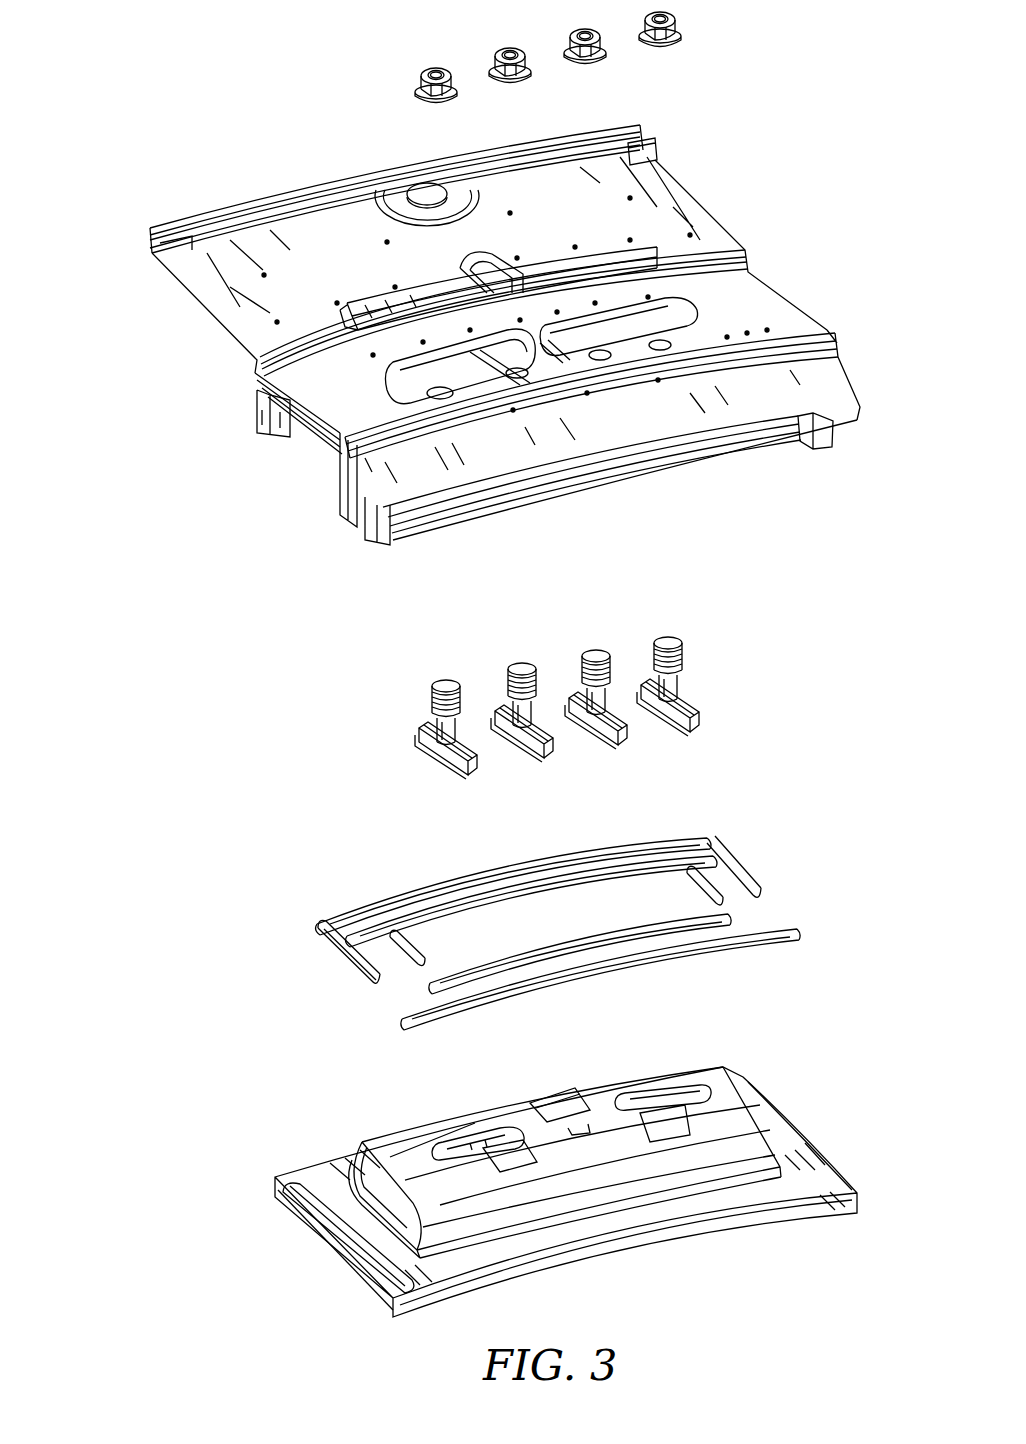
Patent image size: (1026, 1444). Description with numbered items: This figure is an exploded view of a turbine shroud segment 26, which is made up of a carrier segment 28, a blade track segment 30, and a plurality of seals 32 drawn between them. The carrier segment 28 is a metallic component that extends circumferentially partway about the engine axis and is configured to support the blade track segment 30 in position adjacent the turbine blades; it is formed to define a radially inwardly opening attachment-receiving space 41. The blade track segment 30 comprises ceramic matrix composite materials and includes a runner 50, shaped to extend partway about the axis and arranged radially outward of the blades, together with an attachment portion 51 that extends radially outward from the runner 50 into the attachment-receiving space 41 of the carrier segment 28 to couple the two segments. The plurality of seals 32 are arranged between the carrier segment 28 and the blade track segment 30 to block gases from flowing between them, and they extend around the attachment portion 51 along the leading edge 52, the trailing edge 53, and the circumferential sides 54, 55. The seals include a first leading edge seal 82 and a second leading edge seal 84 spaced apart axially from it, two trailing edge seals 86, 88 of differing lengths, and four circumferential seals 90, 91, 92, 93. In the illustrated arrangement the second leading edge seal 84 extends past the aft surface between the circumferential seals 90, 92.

The turbine shroud segment 26 is at (142, 102).
The carrier segment 28 is at (273, 169).
The attachment-receiving space 41 is at (355, 525).
The plurality of seals 32 is at (246, 900).
The first leading edge seal 82 is at (413, 884).
The second leading edge seal 84 is at (538, 873).
The trailing edge seal 86 is at (672, 966).
The trailing edge seal 88 is at (592, 953).
The circumferential seal 90 is at (358, 993).
The circumferential seal 91 is at (388, 963).
The circumferential seal 92 is at (783, 896).
The circumferential seal 93 is at (727, 883).
The blade track segment 30 is at (214, 1205).
The runner 50 is at (298, 1163).
The attachment portion 51 is at (411, 1156).
The leading edge 52 is at (343, 1138).
The trailing edge 53 is at (610, 1247).
The circumferential side 54 is at (343, 1278).
The circumferential side 55 is at (818, 1140).